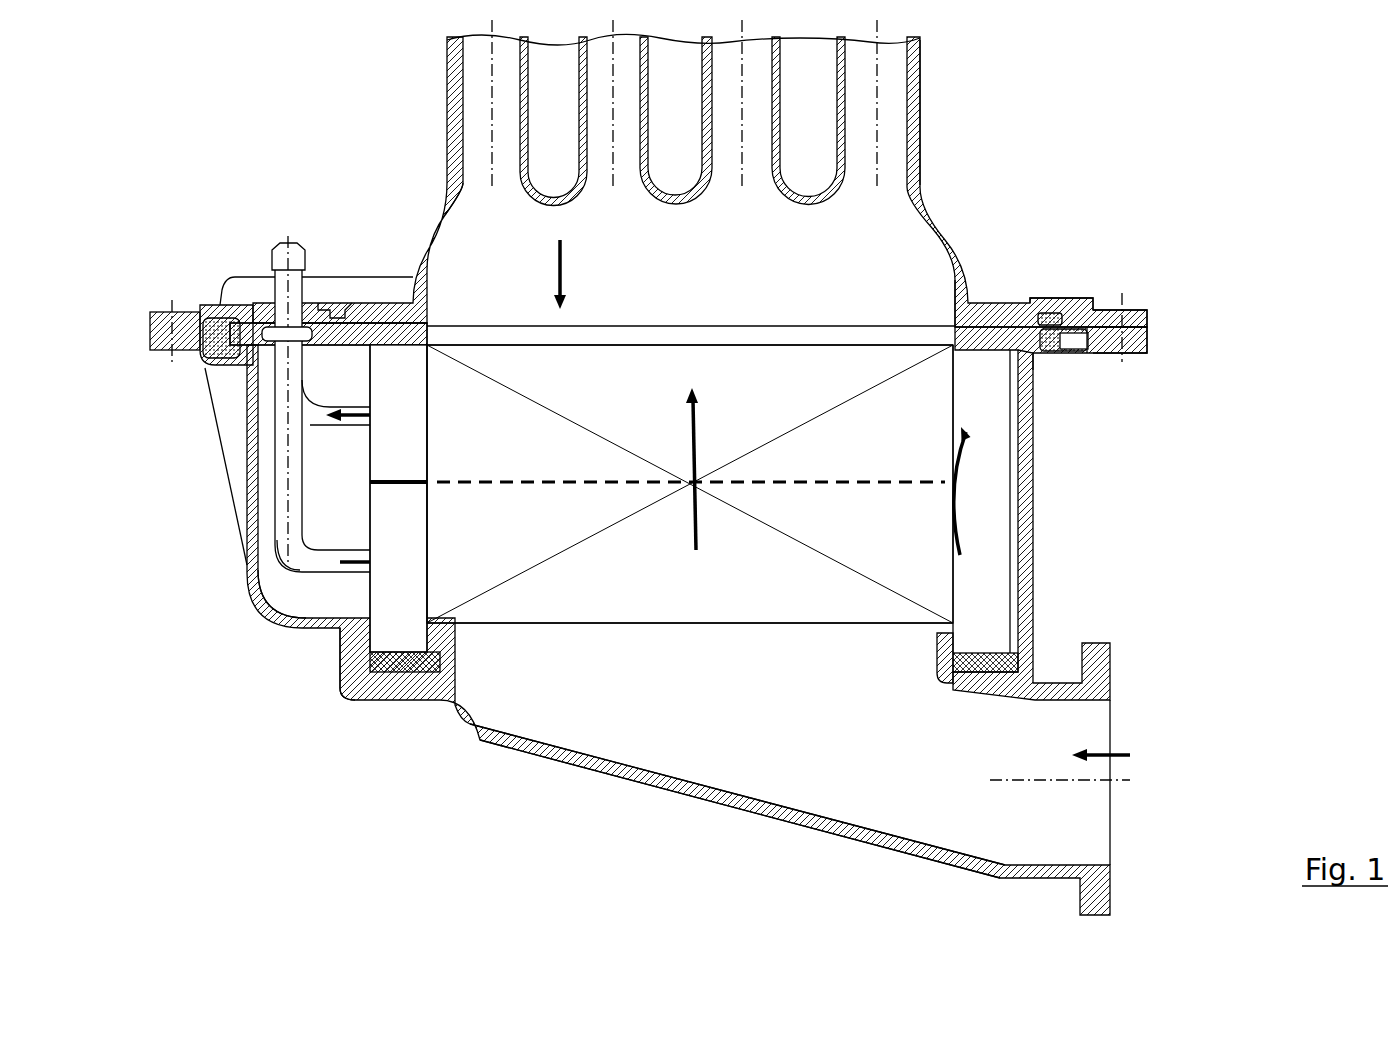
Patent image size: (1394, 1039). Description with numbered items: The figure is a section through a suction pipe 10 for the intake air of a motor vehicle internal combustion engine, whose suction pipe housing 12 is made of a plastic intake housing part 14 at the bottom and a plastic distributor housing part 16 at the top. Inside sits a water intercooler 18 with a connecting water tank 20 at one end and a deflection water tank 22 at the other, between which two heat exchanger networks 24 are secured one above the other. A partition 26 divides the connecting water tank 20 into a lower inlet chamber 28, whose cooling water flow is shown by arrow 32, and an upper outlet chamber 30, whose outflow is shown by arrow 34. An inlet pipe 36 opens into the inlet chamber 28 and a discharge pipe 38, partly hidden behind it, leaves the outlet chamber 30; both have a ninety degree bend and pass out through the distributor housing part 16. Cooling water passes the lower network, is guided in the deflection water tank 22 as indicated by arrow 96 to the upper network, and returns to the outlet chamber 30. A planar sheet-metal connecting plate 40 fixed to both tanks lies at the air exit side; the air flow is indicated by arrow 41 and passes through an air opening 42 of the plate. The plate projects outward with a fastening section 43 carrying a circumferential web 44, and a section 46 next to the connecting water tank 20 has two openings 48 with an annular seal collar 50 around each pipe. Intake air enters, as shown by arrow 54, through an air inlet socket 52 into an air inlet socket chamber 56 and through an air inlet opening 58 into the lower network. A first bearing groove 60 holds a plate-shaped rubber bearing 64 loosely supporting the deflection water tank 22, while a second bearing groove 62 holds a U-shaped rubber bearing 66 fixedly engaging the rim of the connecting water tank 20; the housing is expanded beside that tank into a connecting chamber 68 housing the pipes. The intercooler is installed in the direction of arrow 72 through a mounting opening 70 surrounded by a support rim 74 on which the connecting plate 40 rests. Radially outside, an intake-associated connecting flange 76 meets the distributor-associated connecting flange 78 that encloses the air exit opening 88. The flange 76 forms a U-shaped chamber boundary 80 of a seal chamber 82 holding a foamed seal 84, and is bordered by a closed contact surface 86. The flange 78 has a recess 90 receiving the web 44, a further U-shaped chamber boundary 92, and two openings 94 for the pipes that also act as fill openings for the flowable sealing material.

The suction pipe 10 is at (330, 88).
The suction pipe housing 12 is at (942, 200).
The intake housing part 14 is at (765, 800).
The distributor housing part 16 is at (920, 130).
The water intercooler 18 is at (777, 633).
The connecting water tank 20 is at (437, 500).
The deflection water tank 22 is at (1000, 578).
The heat exchanger networks 24 is at (747, 415).
The partition 26 is at (437, 480).
The inlet chamber 28 is at (389, 618).
The outlet chamber 30 is at (389, 460).
The arrow 32 is at (360, 577).
The arrow 34 is at (360, 420).
The inlet pipe 36 is at (290, 545).
The discharge pipe 38 is at (320, 412).
The connecting plate 40 is at (955, 326).
The arrow 41 is at (690, 430).
The air opening 42 is at (660, 342).
The fastening section 43 is at (337, 318).
The web 44 is at (1052, 320).
The section 46 is at (233, 305).
The openings 48 is at (262, 357).
The seal collar 50 is at (267, 328).
The air inlet socket 52 is at (1072, 822).
The arrow 54 is at (1135, 757).
The air inlet socket chamber 56 is at (722, 757).
The air inlet opening 58 is at (577, 648).
The first bearing groove 60 is at (948, 685).
The second bearing groove 62 is at (385, 680).
The rubber bearing 64 is at (985, 665).
The rubber bearing 66 is at (395, 655).
The connecting chamber 68 is at (285, 592).
The mounting opening 70 is at (380, 348).
The arrow 72 is at (555, 280).
The support rim 74 is at (1021, 352).
The intake-associated connecting flange 76 is at (1152, 348).
The distributor-associated connecting flange 78 is at (1152, 318).
The chamber boundary 80 is at (1066, 358).
The seal chamber 82 is at (1075, 348).
The seal 84 is at (1085, 340).
The contact surface 86 is at (1150, 335).
The air exit opening 88 is at (745, 318).
The recess 90 is at (1048, 320).
The chamber boundary 92 is at (215, 303).
The openings 94 is at (305, 312).
The arrow 96 is at (1010, 497).